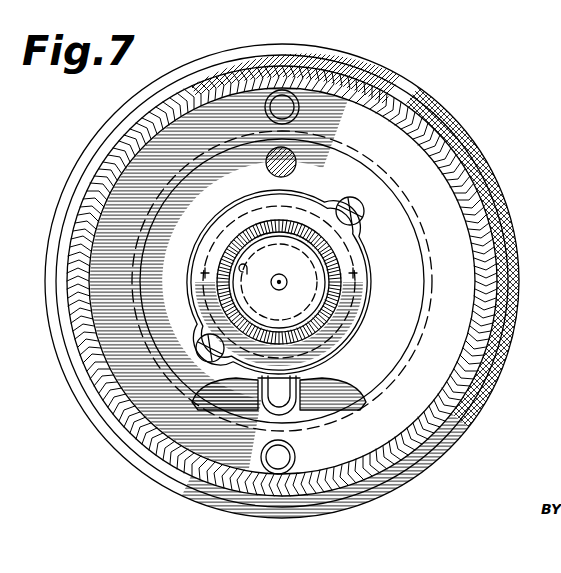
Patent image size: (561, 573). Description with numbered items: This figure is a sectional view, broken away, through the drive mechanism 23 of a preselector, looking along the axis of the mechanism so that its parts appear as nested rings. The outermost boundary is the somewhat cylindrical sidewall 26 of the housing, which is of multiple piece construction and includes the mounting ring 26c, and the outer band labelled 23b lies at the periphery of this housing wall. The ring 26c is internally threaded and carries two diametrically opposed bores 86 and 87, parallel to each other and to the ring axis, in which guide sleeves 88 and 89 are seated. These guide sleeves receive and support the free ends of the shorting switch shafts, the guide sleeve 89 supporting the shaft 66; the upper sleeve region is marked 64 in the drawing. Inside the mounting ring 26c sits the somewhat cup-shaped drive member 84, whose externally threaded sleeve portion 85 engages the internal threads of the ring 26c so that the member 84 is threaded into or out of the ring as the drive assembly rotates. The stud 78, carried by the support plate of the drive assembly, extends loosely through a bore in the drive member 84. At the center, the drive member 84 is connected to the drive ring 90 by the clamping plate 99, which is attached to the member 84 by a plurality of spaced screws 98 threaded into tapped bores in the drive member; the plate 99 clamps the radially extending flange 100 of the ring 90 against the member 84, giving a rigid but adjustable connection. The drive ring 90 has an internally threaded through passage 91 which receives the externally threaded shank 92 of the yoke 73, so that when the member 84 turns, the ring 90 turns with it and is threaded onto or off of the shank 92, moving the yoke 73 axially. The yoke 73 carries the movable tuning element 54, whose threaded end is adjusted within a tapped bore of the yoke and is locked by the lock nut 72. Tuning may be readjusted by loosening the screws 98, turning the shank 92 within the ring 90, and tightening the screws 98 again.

The drive mechanism 23 is at (337, 83).
The housing outer flange 23b is at (465, 145).
The cylindrical sidewall 26 is at (92, 427).
The mounting ring 26c is at (147, 462).
The movable tuning element 54 is at (262, 414).
The seal 64 is at (285, 90).
The shaft 66 is at (262, 458).
The lock nut 72 is at (318, 420).
The yoke 73 is at (228, 408).
The stud 78 is at (266, 162).
The drive member 84 is at (435, 257).
The externally threaded sleeve portion 85 is at (366, 168).
The bore 86 is at (300, 77).
The bore 87 is at (278, 472).
The guide sleeve 88 is at (260, 113).
The guide sleeve 89 is at (294, 451).
The drive ring 90 is at (337, 307).
The internally threaded through passage 91 is at (190, 276).
The externally threaded shank 92 is at (324, 299).
The screws 98 is at (348, 198).
The clamping plate 99 is at (367, 257).
The radially extending flange 100 is at (355, 273).